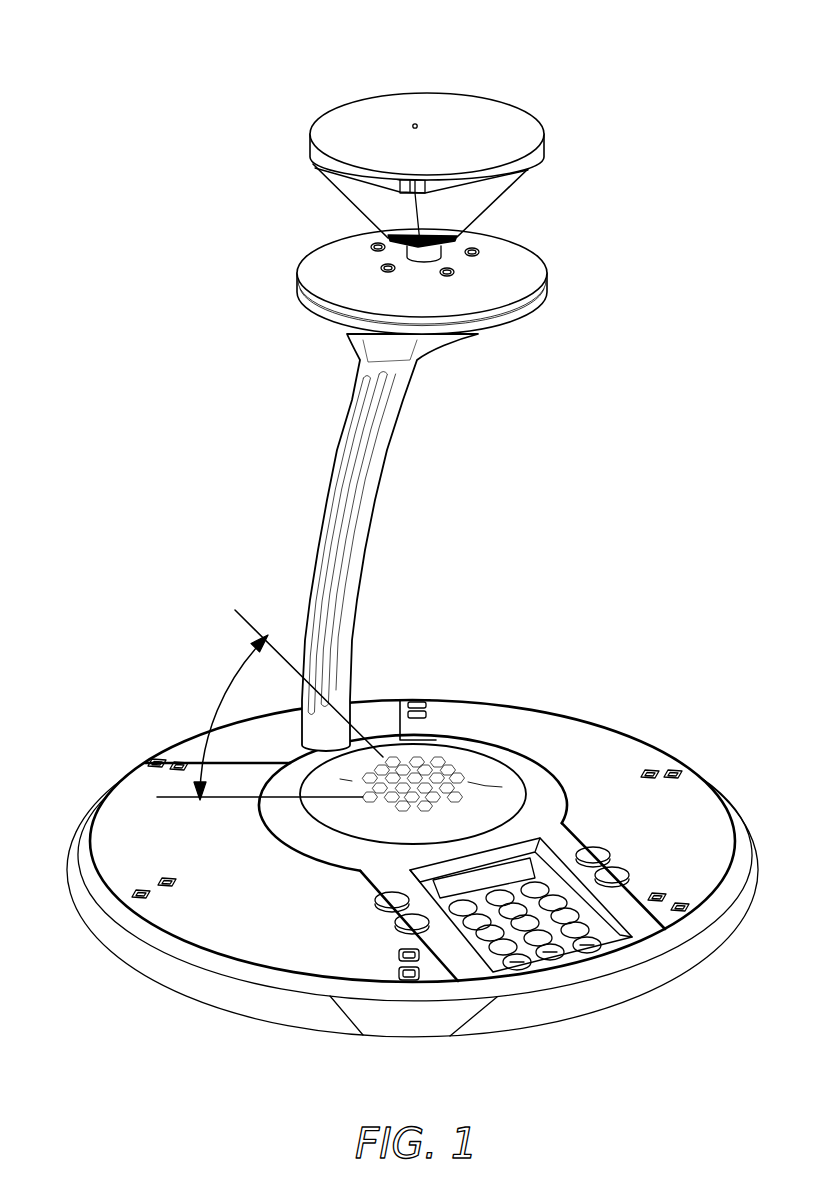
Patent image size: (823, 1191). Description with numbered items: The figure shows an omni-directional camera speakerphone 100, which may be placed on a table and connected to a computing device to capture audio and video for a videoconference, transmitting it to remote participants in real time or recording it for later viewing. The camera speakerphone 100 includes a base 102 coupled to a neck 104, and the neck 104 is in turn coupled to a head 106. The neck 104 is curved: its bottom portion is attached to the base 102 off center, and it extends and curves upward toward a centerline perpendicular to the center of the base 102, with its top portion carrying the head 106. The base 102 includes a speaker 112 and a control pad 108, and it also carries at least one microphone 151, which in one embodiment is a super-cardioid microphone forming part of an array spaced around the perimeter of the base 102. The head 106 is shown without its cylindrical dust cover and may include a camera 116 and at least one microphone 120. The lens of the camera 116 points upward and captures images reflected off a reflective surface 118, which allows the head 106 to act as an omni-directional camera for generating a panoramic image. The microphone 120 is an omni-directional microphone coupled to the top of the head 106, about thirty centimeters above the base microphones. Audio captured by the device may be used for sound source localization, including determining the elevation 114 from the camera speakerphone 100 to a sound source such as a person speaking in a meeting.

The camera speakerphone 100 is at (115, 55).
The base 102 is at (160, 973).
The neck 104 is at (327, 520).
The head 106 is at (489, 197).
The control pad 108 is at (553, 952).
The speaker 112 is at (483, 767).
The elevation 114 is at (200, 683).
The camera 116 is at (382, 268).
The reflective surface 118 is at (360, 203).
The microphone 120 is at (427, 120).
The microphone 151 is at (410, 980).